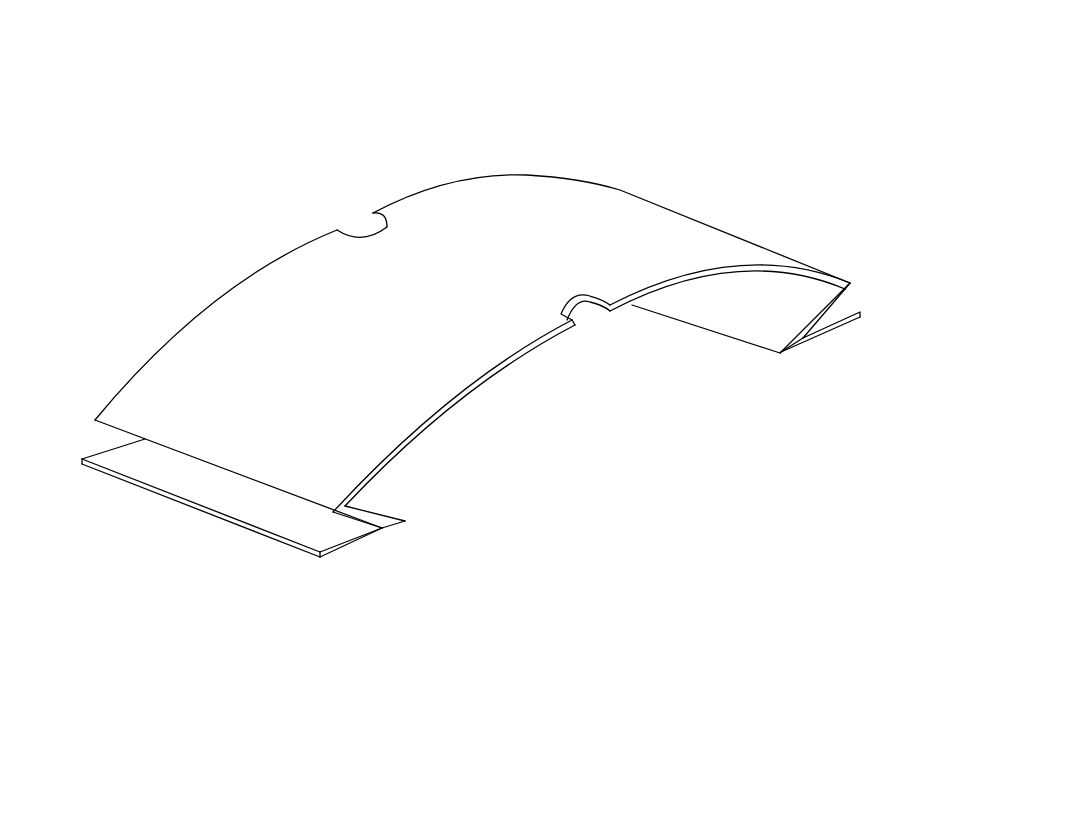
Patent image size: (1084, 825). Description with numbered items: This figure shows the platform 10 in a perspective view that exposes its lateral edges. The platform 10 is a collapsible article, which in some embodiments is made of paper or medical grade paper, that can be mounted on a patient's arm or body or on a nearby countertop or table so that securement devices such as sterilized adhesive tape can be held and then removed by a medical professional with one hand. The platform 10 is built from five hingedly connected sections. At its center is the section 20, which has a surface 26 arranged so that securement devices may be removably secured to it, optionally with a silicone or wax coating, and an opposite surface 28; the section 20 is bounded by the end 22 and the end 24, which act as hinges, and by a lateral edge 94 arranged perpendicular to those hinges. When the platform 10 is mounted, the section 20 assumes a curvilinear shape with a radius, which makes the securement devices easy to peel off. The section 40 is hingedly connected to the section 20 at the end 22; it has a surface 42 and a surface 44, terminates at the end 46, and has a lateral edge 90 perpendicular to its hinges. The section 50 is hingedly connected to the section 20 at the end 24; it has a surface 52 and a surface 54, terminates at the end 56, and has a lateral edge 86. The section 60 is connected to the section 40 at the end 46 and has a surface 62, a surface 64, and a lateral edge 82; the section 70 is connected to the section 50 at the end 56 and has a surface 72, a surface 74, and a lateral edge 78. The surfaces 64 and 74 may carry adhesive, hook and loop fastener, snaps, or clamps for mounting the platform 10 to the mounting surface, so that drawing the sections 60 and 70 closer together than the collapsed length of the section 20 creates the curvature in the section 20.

The platform 10 is at (499, 409).
The section 20 is at (472, 333).
The end 22 is at (611, 215).
The end 24 is at (238, 411).
The surface 26 is at (241, 316).
The surface 28 is at (591, 388).
The section 40 is at (741, 295).
The surface 42 is at (783, 266).
The surface 44 is at (804, 265).
The end 46 is at (706, 357).
The section 50 is at (423, 541).
The surface 52 is at (408, 481).
The end 56 is at (444, 549).
The lateral edge 86 is at (396, 576).
The section 60 is at (847, 341).
The surface 62 is at (855, 282).
The surface 64 is at (795, 396).
The lateral edge 82 is at (822, 382).
The lateral edge 90 is at (823, 252).
The section 70 is at (244, 507).
The surface 72 is at (113, 406).
The surface 74 is at (351, 594).
The lateral edge 78 is at (363, 575).
The surface 54 is at (201, 539).
The lateral edge 94 is at (587, 373).